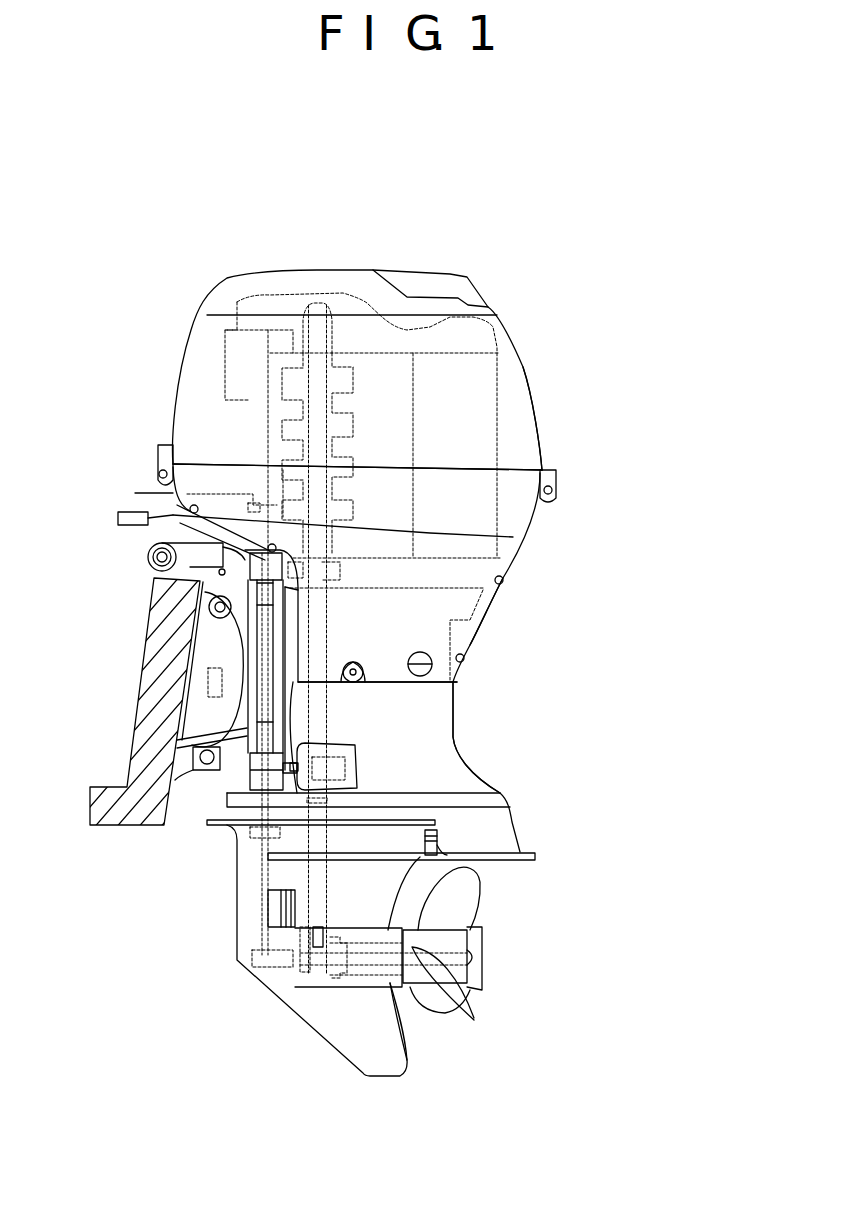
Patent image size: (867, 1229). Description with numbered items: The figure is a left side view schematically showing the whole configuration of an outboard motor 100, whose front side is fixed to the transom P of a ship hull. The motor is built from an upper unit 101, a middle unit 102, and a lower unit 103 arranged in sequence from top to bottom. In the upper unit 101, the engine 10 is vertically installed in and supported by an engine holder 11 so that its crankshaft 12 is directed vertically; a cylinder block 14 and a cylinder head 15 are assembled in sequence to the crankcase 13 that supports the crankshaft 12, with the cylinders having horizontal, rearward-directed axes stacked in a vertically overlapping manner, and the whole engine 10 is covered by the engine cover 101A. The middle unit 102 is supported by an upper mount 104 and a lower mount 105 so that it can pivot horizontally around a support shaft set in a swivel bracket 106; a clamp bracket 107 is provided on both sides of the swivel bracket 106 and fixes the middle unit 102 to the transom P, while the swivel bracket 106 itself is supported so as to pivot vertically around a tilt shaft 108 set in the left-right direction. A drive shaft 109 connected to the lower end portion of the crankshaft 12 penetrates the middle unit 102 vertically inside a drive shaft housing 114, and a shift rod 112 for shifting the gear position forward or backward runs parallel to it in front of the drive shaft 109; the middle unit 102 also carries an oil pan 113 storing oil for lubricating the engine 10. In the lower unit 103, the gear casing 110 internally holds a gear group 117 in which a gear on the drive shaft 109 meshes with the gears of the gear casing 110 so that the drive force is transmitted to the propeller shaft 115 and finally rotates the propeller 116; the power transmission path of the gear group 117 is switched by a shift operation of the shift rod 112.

The outboard motor 100 is at (500, 297).
The engine 10 is at (507, 407).
The upper unit 101 is at (690, 268).
The engine cover 101A is at (537, 417).
The middle unit 102 is at (690, 562).
The lower unit 103 is at (690, 797).
The engine holder 11 is at (485, 568).
The crankshaft 12 is at (307, 427).
The crankcase 13 is at (277, 367).
The cylinder block 14 is at (372, 353).
The cylinder head 15 is at (495, 450).
The upper mount 104 is at (335, 590).
The lower mount 105 is at (333, 747).
The swivel bracket 106 is at (250, 617).
The clamp bracket 107 is at (208, 645).
The tilt shaft 108 is at (148, 557).
The drive shaft 109 is at (333, 684).
The gear casing 110 is at (243, 950).
The shift rod 112 is at (263, 920).
The oil pan 113 is at (487, 605).
The drive shaft housing 114 is at (455, 723).
The propeller shaft 115 is at (393, 957).
The propeller 116 is at (473, 903).
The gear group 117 is at (298, 977).
The transom P is at (147, 695).